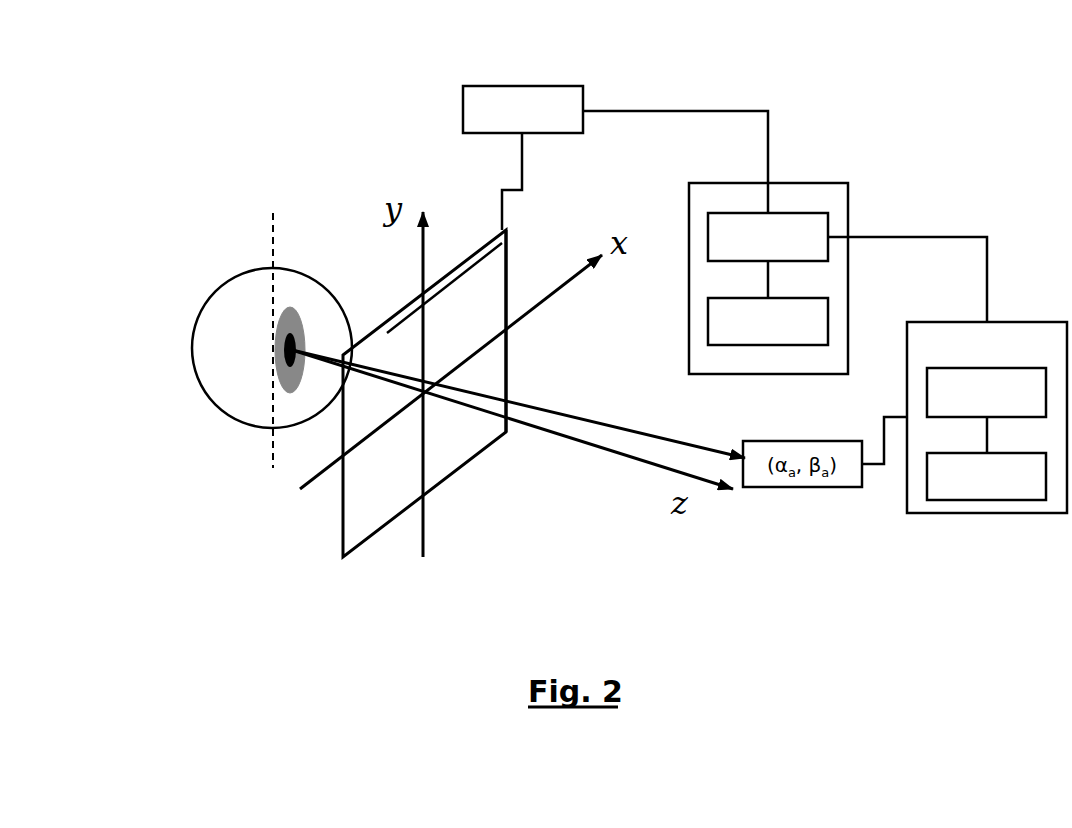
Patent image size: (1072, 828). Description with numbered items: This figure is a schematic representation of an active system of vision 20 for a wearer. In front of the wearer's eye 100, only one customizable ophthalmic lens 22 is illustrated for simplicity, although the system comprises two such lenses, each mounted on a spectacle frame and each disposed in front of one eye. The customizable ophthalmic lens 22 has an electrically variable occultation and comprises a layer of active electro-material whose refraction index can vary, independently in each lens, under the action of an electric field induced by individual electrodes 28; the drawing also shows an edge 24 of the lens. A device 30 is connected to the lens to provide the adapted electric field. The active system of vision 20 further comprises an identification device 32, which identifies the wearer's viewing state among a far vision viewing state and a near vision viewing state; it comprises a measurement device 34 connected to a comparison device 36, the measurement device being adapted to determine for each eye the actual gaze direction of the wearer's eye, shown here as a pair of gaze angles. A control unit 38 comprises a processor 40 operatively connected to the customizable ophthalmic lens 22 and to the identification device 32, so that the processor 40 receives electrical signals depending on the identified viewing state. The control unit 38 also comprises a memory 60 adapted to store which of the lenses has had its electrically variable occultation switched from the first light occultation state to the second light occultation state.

The active system of vision 20 is at (893, 133).
The customizable ophthalmic lens 22 is at (315, 550).
The frame edge 24 is at (508, 265).
The individual electrodes 28 is at (472, 262).
The device adapted to provide the adapted electric field 30 is at (615, 158).
The identification device 32 is at (987, 417).
The measurement device 34 is at (986, 392).
The comparison device 36 is at (986, 476).
The control unit 38 is at (668, 326).
The processor 40 is at (768, 237).
The memory 60 is at (768, 321).
The eye 100 is at (236, 316).